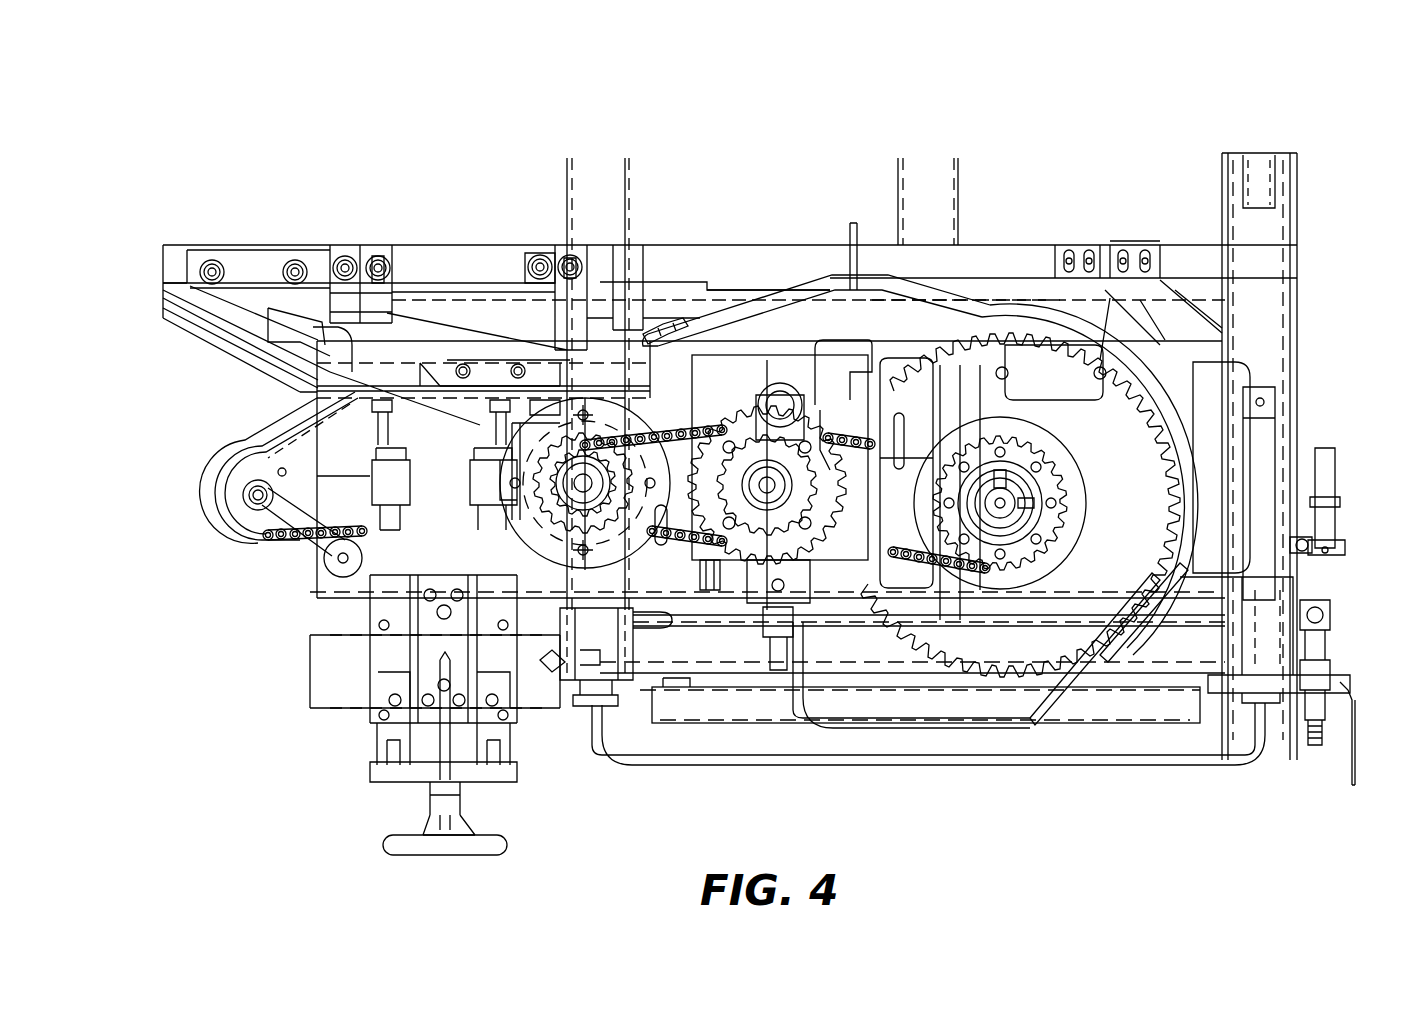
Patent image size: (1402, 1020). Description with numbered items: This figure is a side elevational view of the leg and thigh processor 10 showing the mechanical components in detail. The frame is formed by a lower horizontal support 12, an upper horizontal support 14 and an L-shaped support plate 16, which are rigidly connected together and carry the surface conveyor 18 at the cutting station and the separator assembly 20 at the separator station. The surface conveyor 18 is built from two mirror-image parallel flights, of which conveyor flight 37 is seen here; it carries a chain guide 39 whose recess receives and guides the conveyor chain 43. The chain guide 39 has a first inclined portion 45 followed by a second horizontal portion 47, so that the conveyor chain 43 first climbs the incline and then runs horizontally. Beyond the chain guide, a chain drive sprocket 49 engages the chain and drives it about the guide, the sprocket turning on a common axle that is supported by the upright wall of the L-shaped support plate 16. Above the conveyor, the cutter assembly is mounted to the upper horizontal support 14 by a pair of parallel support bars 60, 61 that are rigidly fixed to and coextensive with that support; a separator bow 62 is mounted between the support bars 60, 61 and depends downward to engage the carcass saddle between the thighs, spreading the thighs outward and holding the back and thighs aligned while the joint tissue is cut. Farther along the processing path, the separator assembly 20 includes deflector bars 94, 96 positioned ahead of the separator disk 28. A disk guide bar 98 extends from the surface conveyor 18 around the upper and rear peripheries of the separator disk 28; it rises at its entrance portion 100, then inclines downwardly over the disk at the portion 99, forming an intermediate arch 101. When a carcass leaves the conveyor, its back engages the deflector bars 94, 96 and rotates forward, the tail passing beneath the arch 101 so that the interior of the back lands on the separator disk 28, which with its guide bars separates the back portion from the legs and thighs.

The leg and thigh processor 10 is at (1178, 169).
The lower horizontal support 12 is at (1165, 710).
The upper horizontal support 14 is at (818, 245).
The L-shaped support plate 16 is at (322, 386).
The surface conveyor 18 is at (270, 556).
The separator assembly 20 is at (1090, 708).
The separator disk 28 is at (1020, 505).
The conveyor flight 37 is at (246, 525).
The chain guide 39 is at (236, 488).
The conveyor chain 43 is at (308, 540).
The first inclined portion 45 is at (232, 454).
The second horizontal portion 47 is at (421, 406).
The chain drive sprocket 49 is at (656, 438).
The support bar 60 is at (462, 262).
The support bar 61 is at (456, 284).
The separator bow 62 is at (193, 362).
The deflector bar 94 is at (822, 385).
The deflector bar 96 is at (860, 395).
The disk guide bar 98 is at (897, 285).
The downwardly inclined portion of disk guide bar 99 is at (1180, 432).
The entrance portion 100 is at (815, 290).
The intermediate arch 101 is at (856, 270).